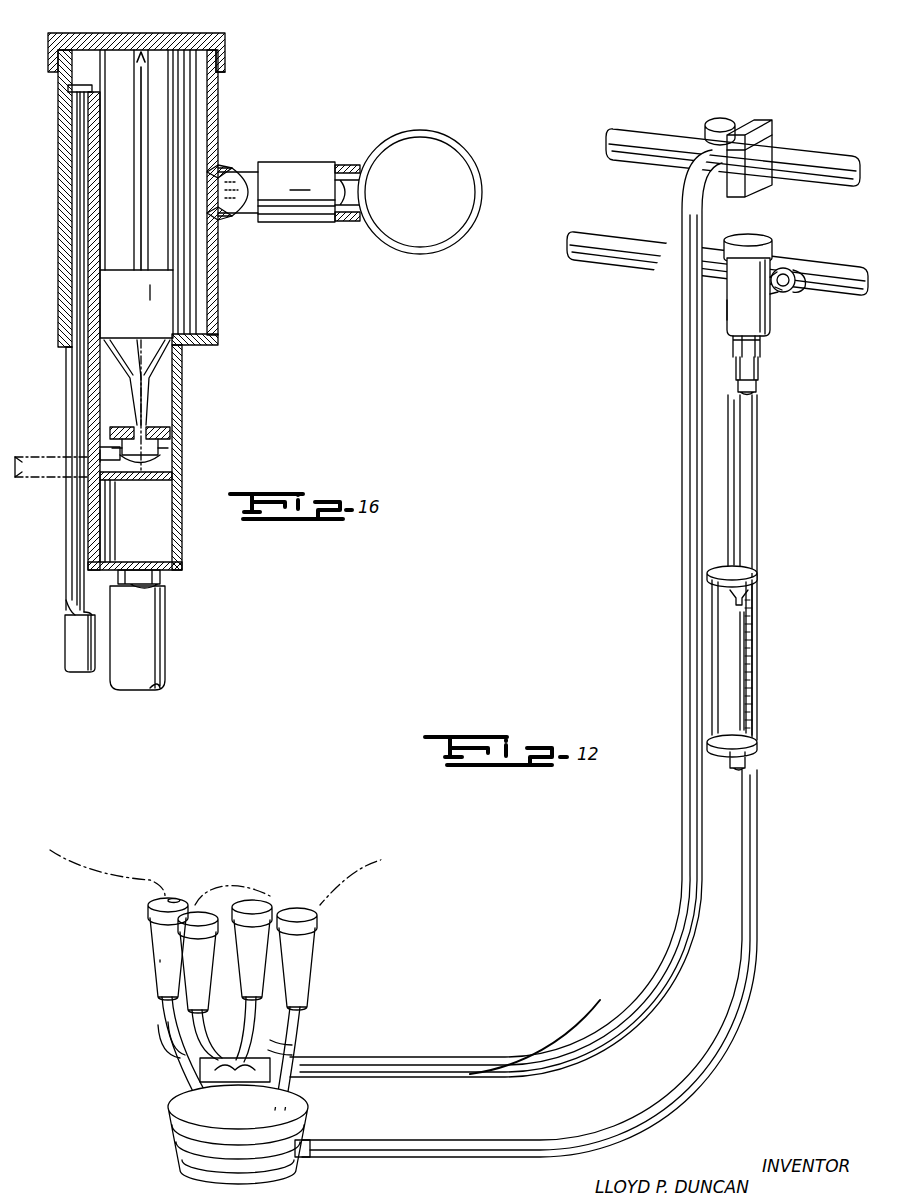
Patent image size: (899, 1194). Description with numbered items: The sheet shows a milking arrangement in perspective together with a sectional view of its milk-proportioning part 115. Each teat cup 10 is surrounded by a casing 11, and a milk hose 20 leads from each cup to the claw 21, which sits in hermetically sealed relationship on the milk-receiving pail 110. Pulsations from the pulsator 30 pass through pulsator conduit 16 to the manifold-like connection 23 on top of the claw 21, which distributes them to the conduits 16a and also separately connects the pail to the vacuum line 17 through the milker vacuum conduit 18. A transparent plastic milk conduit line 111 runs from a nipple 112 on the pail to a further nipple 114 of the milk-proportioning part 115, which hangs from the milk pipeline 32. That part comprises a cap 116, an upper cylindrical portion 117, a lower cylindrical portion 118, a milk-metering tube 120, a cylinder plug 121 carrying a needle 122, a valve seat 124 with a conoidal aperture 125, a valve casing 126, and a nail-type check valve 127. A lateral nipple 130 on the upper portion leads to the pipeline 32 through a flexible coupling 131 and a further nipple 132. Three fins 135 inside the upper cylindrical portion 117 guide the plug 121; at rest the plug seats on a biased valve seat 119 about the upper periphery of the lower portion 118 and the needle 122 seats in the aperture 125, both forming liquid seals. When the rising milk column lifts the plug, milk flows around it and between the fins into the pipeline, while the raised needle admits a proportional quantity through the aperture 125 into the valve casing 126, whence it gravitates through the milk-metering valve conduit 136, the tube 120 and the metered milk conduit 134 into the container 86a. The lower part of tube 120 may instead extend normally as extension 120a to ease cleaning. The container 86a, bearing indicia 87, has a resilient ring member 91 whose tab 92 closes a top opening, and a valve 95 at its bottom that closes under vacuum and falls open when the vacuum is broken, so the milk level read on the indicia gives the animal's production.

In FIG. 12, the teat cup 10 is at (325, 982).
In FIG. 12, the casing 11 is at (313, 958).
In FIG. 12, the pulsator conduit 16 is at (505, 1058).
In FIG. 12, the pulsator conduit 16a is at (175, 1042).
In FIG. 12, the vacuum line 17 is at (806, 157).
In FIG. 12, the milker vacuum conduit 18 is at (545, 1063).
In FIG. 12, the milk hose 20 is at (262, 1030).
In FIG. 12, the claw 21 is at (308, 1108).
In FIG. 12, the manifold-like connection 23 is at (240, 1098).
In FIG. 12, the pulsator 30 is at (732, 117).
In FIG. 16, the milk pipeline 32 is at (385, 240).
In FIG. 12, the milk pipeline 32 is at (831, 285).
In FIG. 12, the container 86a is at (757, 668).
In FIG. 12, the indicia 87 is at (740, 702).
In FIG. 12, the resilient ring member 91 is at (758, 580).
In FIG. 12, the tab 92 is at (748, 600).
In FIG. 12, the valve 95 is at (740, 770).
In FIG. 12, the milk-receiving pail 110 is at (300, 1143).
In FIG. 16, the milk conduit line 111 is at (138, 639).
In FIG. 12, the milk conduit line 111 is at (757, 518).
In FIG. 12, the nipple 112 is at (302, 1158).
In FIG. 16, the nipple 114 is at (160, 586).
In FIG. 12, the nipple 114 is at (756, 386).
In FIG. 16, the milk-proportioning part 115 is at (228, 101).
In FIG. 12, the milk-proportioning part 115 is at (779, 324).
In FIG. 16, the cap 116 is at (225, 57).
In FIG. 12, the cap 116 is at (762, 236).
In FIG. 16, the upper cylindrical portion 117 is at (218, 124).
In FIG. 12, the upper cylindrical portion 117 is at (752, 316).
In FIG. 16, the lower cylindrical portion 118 is at (182, 520).
In FIG. 12, the lower cylindrical portion 118 is at (758, 368).
In FIG. 16, the biased valve seat 119 is at (181, 346).
In FIG. 16, the milk-metering tube 120 is at (80, 532).
In FIG. 12, the milk-metering tube 120 is at (745, 356).
In FIG. 16, the extension 120a is at (60, 480).
In FIG. 16, the cylinder plug 121 is at (143, 309).
In FIG. 16, the needle 122 is at (172, 455).
In FIG. 16, the valve seat 124 is at (165, 443).
In FIG. 16, the conoidal aperture 125 is at (150, 437).
In FIG. 16, the valve casing 126 is at (96, 450).
In FIG. 16, the nail-type check valve 127 is at (62, 90).
In FIG. 16, the lateral nipple 130 is at (245, 172).
In FIG. 12, the lateral nipple 130 is at (776, 292).
In FIG. 16, the flexible coupling 131 is at (305, 192).
In FIG. 12, the flexible coupling 131 is at (792, 268).
In FIG. 16, the nipple 132 is at (343, 222).
In FIG. 12, the nipple 132 is at (800, 275).
In FIG. 16, the metered milk conduit 134 is at (72, 648).
In FIG. 12, the metered milk conduit 134 is at (736, 470).
In FIG. 16, the fins 135 is at (150, 33).
In FIG. 16, the milk-metering valve conduit 136 is at (100, 484).